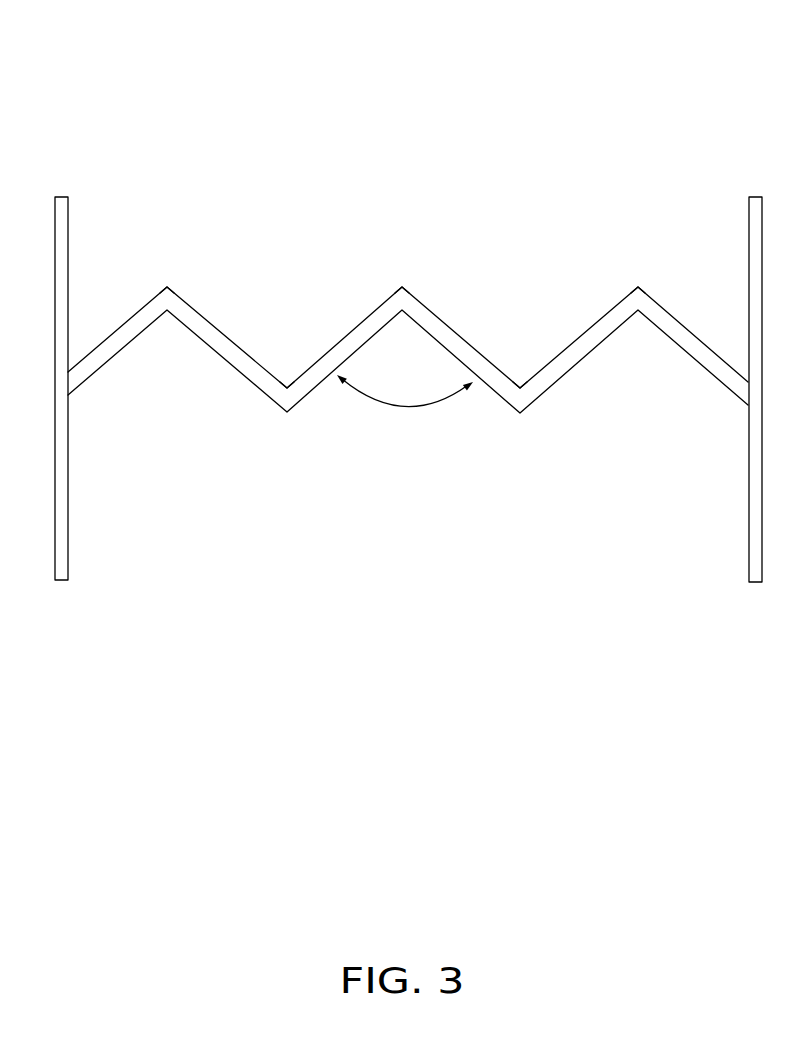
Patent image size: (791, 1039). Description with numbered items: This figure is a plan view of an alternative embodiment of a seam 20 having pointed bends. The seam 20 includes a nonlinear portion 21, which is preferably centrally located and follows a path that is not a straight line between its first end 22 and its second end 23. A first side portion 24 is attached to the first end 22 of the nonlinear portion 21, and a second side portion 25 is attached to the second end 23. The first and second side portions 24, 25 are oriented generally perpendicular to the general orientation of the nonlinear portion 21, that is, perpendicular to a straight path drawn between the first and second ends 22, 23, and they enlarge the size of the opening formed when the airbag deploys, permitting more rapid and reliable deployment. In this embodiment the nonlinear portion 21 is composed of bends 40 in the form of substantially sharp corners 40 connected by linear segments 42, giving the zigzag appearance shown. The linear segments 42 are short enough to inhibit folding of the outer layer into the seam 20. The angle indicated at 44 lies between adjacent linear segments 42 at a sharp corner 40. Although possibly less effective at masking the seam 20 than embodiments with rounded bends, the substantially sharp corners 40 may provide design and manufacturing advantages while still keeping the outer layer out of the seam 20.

The seam 20 is at (334, 108).
The nonlinear portion 21 is at (366, 264).
The first end 22 is at (257, 454).
The second end 23 is at (624, 458).
The first side portion 24 is at (60, 197).
The second side portion 25 is at (755, 197).
The bends 40 is at (168, 286).
The linear segments 42 is at (101, 357).
The included angle between legs 44 is at (405, 413).